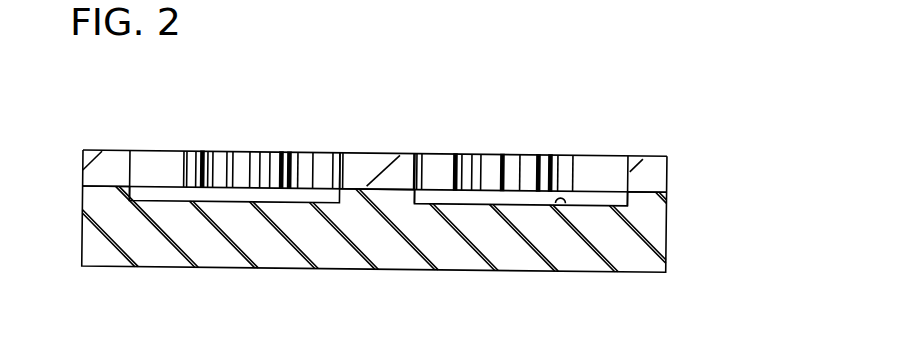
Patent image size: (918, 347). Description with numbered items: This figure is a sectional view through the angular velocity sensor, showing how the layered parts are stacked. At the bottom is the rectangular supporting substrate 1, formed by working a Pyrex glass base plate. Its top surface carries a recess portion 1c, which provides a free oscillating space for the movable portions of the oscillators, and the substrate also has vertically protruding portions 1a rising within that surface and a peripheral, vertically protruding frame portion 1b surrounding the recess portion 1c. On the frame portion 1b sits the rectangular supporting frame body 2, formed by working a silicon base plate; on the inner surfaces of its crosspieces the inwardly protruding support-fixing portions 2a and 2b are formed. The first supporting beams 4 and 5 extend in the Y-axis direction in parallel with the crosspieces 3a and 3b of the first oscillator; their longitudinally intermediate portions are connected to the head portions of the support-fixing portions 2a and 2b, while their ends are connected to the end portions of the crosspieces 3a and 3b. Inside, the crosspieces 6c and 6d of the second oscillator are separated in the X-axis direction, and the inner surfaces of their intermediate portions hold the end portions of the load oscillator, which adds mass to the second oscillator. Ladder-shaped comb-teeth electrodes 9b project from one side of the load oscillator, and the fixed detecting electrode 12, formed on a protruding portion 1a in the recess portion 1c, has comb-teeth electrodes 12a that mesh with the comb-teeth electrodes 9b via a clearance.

The supporting substrate 1 is at (657, 234).
The vertically protruding portion 1a is at (383, 195).
The frame portion 1b is at (130, 163).
The recess portion 1c is at (566, 198).
The supporting frame body 2 is at (118, 158).
The support-fixing portion 2a is at (187, 152).
The support-fixing portion 2b is at (568, 155).
The crosspiece of first oscillator 3a is at (223, 181).
The crosspiece of first oscillator 3b is at (534, 193).
The first supporting beam 4 is at (200, 164).
The first supporting beam 5 is at (541, 153).
The crosspiece of second oscillator 6c is at (258, 176).
The crosspiece of second oscillator 6d is at (489, 176).
The comb-teeth electrode 9b is at (322, 157).
The fixed detecting electrode 12 is at (380, 157).
The comb-teeth electrode 12a is at (288, 153).